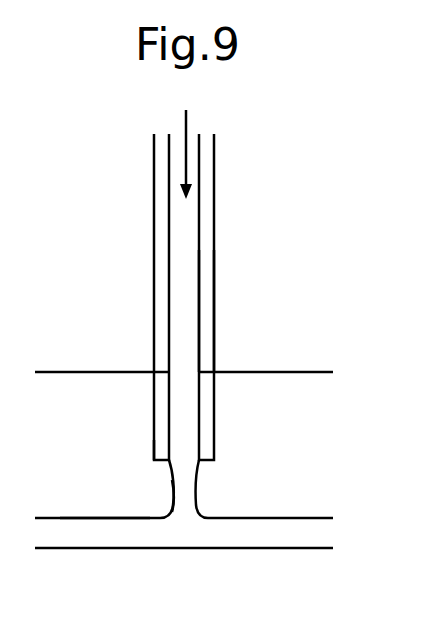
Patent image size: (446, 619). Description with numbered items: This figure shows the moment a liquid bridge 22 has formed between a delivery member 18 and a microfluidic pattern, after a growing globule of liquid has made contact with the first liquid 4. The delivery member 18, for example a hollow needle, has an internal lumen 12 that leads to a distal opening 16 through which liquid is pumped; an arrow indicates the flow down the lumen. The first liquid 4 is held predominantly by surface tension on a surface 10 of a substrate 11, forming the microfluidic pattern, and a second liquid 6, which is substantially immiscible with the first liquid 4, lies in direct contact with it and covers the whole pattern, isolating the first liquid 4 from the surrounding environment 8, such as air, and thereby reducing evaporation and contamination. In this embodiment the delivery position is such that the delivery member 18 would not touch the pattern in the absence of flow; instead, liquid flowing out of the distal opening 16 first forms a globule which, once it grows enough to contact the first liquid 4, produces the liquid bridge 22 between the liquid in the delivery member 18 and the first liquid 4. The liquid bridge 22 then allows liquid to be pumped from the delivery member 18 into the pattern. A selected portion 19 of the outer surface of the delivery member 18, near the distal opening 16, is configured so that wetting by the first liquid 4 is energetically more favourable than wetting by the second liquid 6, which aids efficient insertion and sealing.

The delivery member 18 is at (123, 188).
The internal lumen 12 is at (185, 328).
The surrounding environment 8 is at (281, 274).
The second liquid 6 is at (281, 438).
The selected portion 19 is at (153, 452).
The distal opening 16 is at (183, 462).
The liquid bridge 22 is at (185, 491).
The first liquid 4 is at (102, 540).
The surface 10 is at (313, 547).
The substrate 11 is at (200, 587).